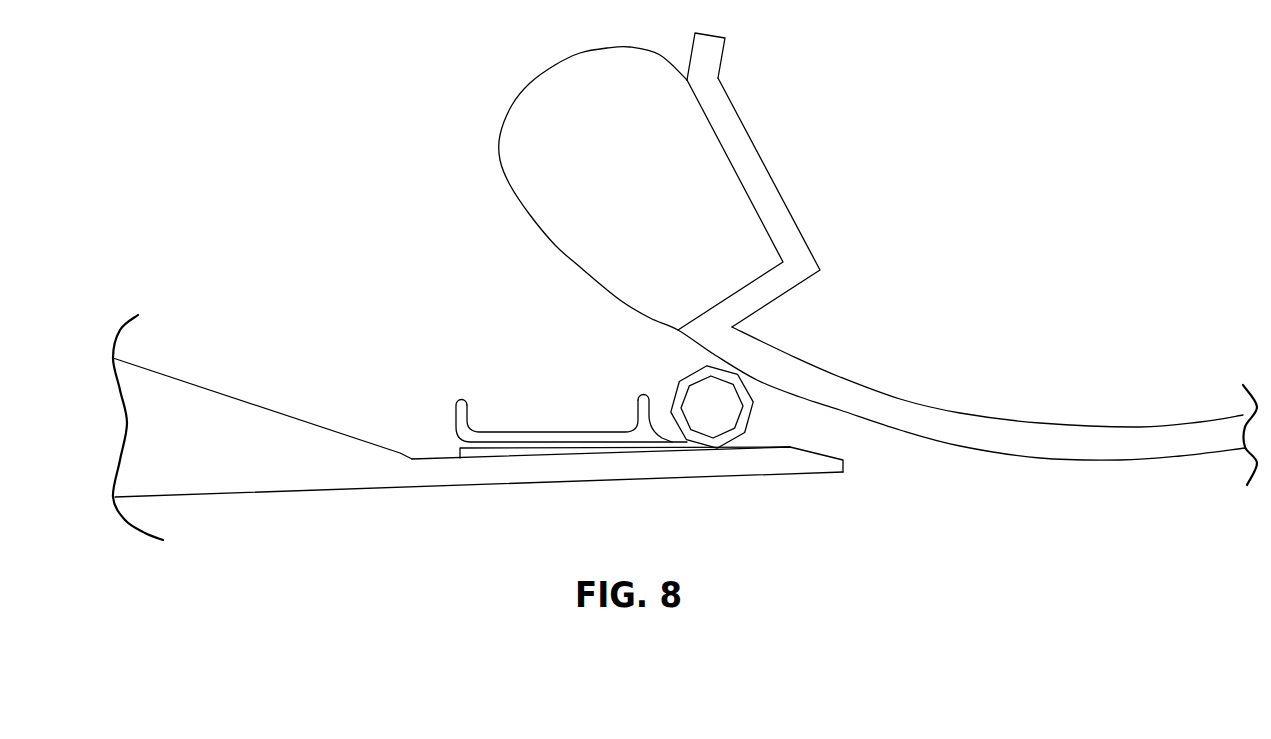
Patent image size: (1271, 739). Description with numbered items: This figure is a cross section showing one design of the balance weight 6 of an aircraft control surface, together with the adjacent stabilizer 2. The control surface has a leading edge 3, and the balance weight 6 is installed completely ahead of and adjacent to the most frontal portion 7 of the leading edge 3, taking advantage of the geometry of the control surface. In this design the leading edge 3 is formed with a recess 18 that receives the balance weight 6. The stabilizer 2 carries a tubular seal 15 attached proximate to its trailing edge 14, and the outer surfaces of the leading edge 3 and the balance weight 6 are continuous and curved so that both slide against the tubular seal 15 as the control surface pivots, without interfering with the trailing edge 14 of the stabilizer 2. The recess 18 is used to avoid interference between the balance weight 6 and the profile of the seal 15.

The stabilizer 2 is at (247, 480).
The leading edge 3 is at (900, 410).
The balance weight 6 is at (545, 110).
The most frontal portion 7 is at (720, 107).
The trailing edge 14 is at (823, 468).
The tubular seal 15 is at (720, 410).
The recess 18 is at (782, 245).